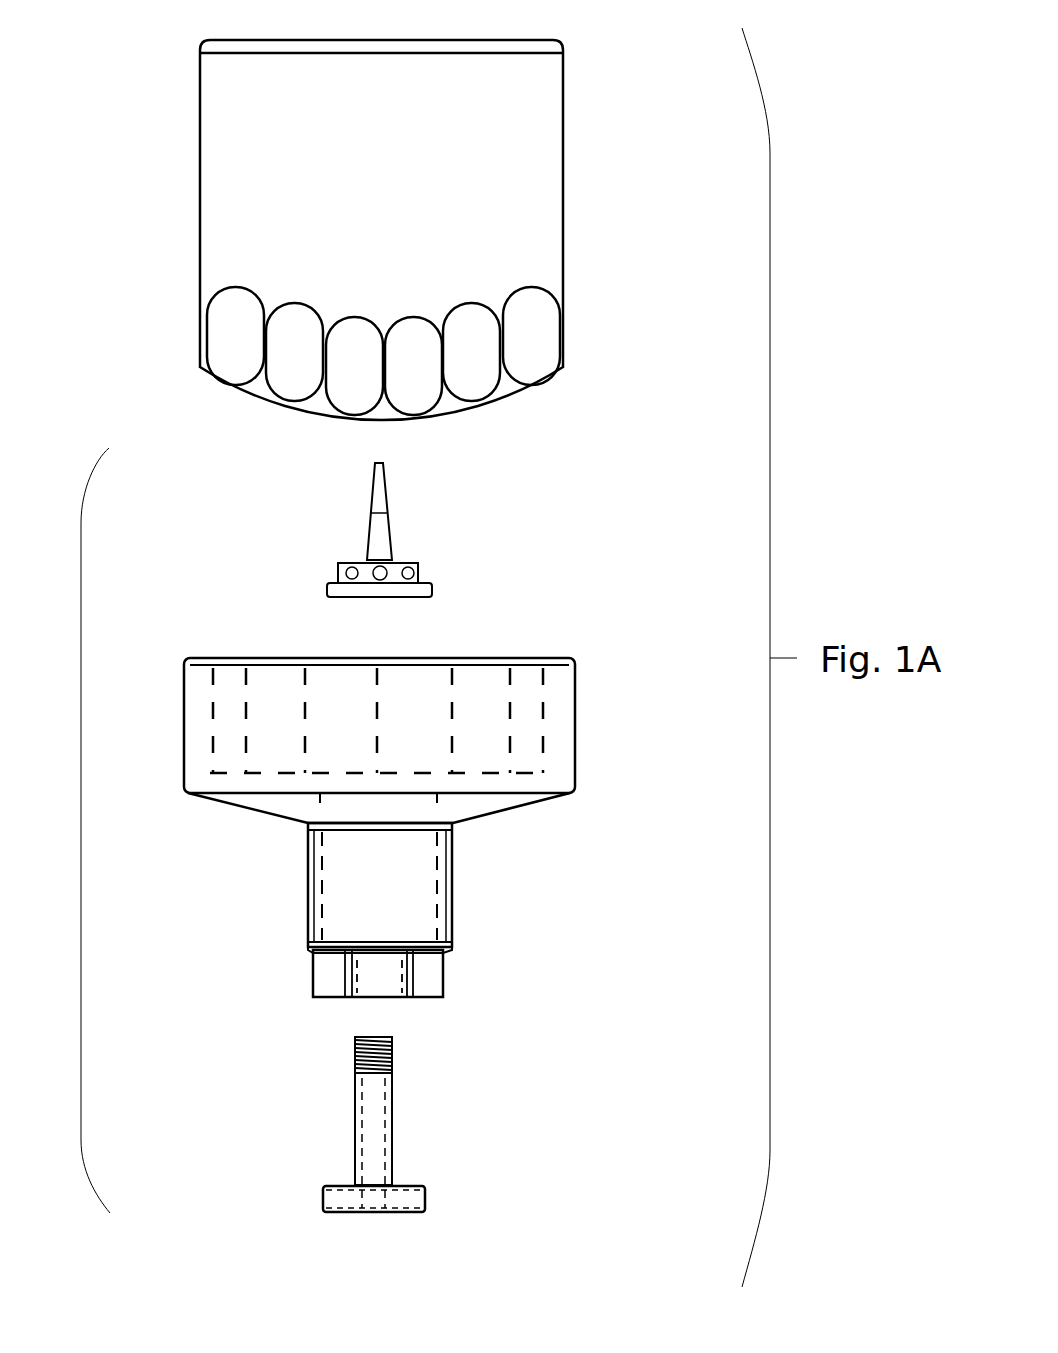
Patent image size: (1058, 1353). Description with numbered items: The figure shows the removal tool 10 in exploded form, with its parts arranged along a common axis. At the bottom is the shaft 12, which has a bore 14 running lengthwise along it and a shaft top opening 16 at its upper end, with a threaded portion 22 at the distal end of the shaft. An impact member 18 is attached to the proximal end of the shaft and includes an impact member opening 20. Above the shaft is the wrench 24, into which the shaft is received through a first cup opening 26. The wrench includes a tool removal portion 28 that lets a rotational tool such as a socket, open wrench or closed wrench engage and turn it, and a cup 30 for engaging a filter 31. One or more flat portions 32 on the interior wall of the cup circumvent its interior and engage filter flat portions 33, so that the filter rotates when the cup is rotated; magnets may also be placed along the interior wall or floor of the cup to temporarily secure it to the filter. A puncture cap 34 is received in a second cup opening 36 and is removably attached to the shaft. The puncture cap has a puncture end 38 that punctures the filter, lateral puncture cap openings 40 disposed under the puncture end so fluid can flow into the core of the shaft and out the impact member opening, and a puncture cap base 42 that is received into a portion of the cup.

The removal tool 10 is at (81, 832).
The shaft 12 is at (355, 1113).
The bore 14 is at (367, 1155).
The shaft top opening 16 is at (350, 1024).
The impact member 18 is at (323, 1202).
The impact member opening 20 is at (384, 1222).
The threaded portion 22 is at (392, 1062).
The wrench 24 is at (640, 778).
The first cup opening 26 is at (380, 983).
The tool removal portion 28 is at (313, 980).
The cup 30 is at (575, 707).
The filter 31 is at (563, 192).
The flat portions 32 is at (528, 673).
The filter flat portions 33 is at (550, 340).
The puncture cap 34 is at (435, 531).
The second cup opening 36 is at (330, 890).
The puncture end 38 is at (378, 503).
The lateral puncture cap openings 40 is at (352, 573).
The puncture cap base 42 is at (330, 593).